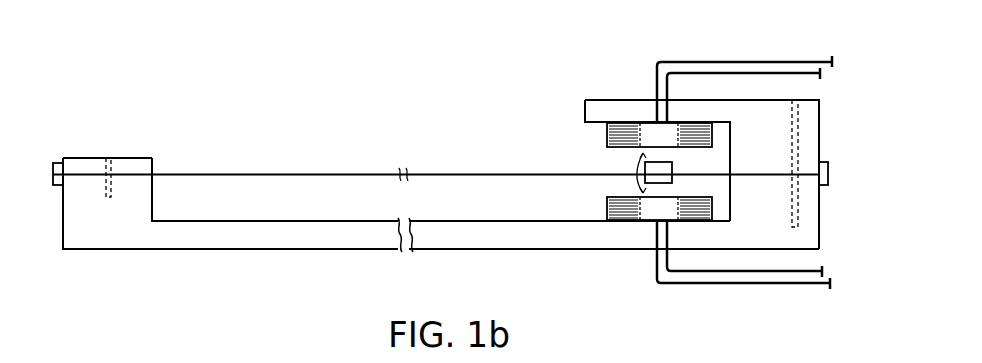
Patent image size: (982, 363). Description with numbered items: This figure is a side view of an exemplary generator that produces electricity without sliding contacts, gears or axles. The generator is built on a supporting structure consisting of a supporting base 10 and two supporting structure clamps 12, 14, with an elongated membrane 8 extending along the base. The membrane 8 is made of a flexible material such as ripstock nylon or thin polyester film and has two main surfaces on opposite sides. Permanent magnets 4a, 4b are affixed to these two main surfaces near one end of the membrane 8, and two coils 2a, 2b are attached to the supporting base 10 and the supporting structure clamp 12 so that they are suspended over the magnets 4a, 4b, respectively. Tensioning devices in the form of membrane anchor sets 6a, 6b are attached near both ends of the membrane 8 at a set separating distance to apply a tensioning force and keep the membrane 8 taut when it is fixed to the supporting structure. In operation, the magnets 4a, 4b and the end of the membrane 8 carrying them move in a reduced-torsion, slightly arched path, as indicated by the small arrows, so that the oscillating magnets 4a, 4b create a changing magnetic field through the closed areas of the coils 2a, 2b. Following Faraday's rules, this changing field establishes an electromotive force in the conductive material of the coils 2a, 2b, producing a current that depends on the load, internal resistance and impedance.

The coil 2a is at (631, 210).
The coil 2b is at (608, 135).
The permanent magnet 4a is at (660, 177).
The permanent magnet 4b is at (658, 165).
The membrane anchor set 6a is at (826, 188).
The membrane anchor set 6b is at (59, 160).
The elongated membrane 8 is at (263, 173).
The supporting base 10 is at (255, 240).
The supporting structure clamp 12 is at (613, 112).
The supporting structure clamp 14 is at (136, 164).